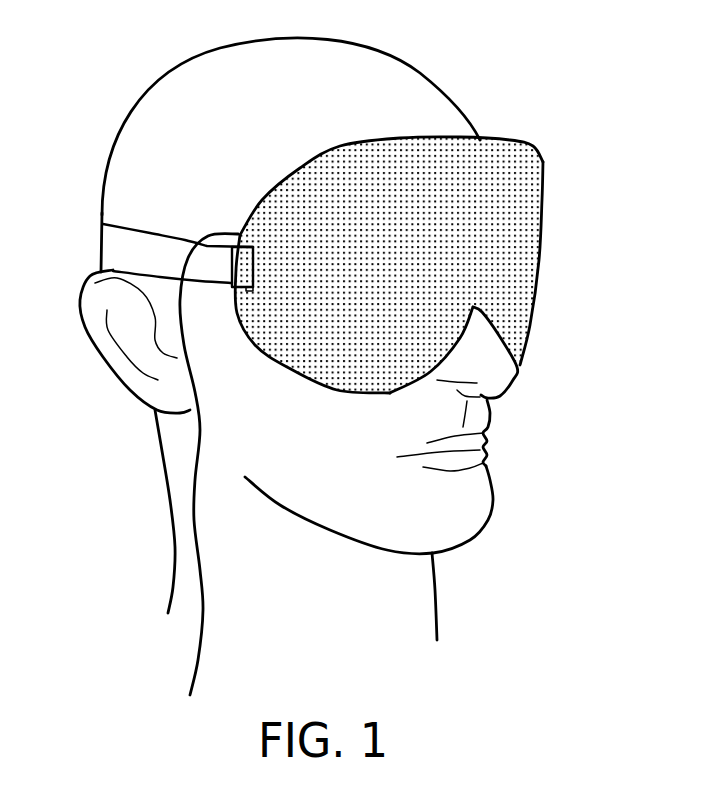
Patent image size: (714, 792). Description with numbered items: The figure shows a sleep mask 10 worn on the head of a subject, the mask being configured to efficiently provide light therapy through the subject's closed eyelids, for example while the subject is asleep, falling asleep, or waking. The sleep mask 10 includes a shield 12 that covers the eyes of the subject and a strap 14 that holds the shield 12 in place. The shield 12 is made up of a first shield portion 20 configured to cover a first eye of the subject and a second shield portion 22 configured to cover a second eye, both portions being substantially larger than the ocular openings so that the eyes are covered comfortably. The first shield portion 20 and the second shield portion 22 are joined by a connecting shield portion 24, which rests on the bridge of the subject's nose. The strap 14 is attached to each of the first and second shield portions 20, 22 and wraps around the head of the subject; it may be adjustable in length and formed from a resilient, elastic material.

The sleep mask 10 is at (334, 261).
The shield 12 is at (354, 145).
The strap 14 is at (112, 244).
The first shield portion 20 is at (527, 280).
The second shield portion 22 is at (367, 320).
The connecting shield portion 24 is at (477, 203).